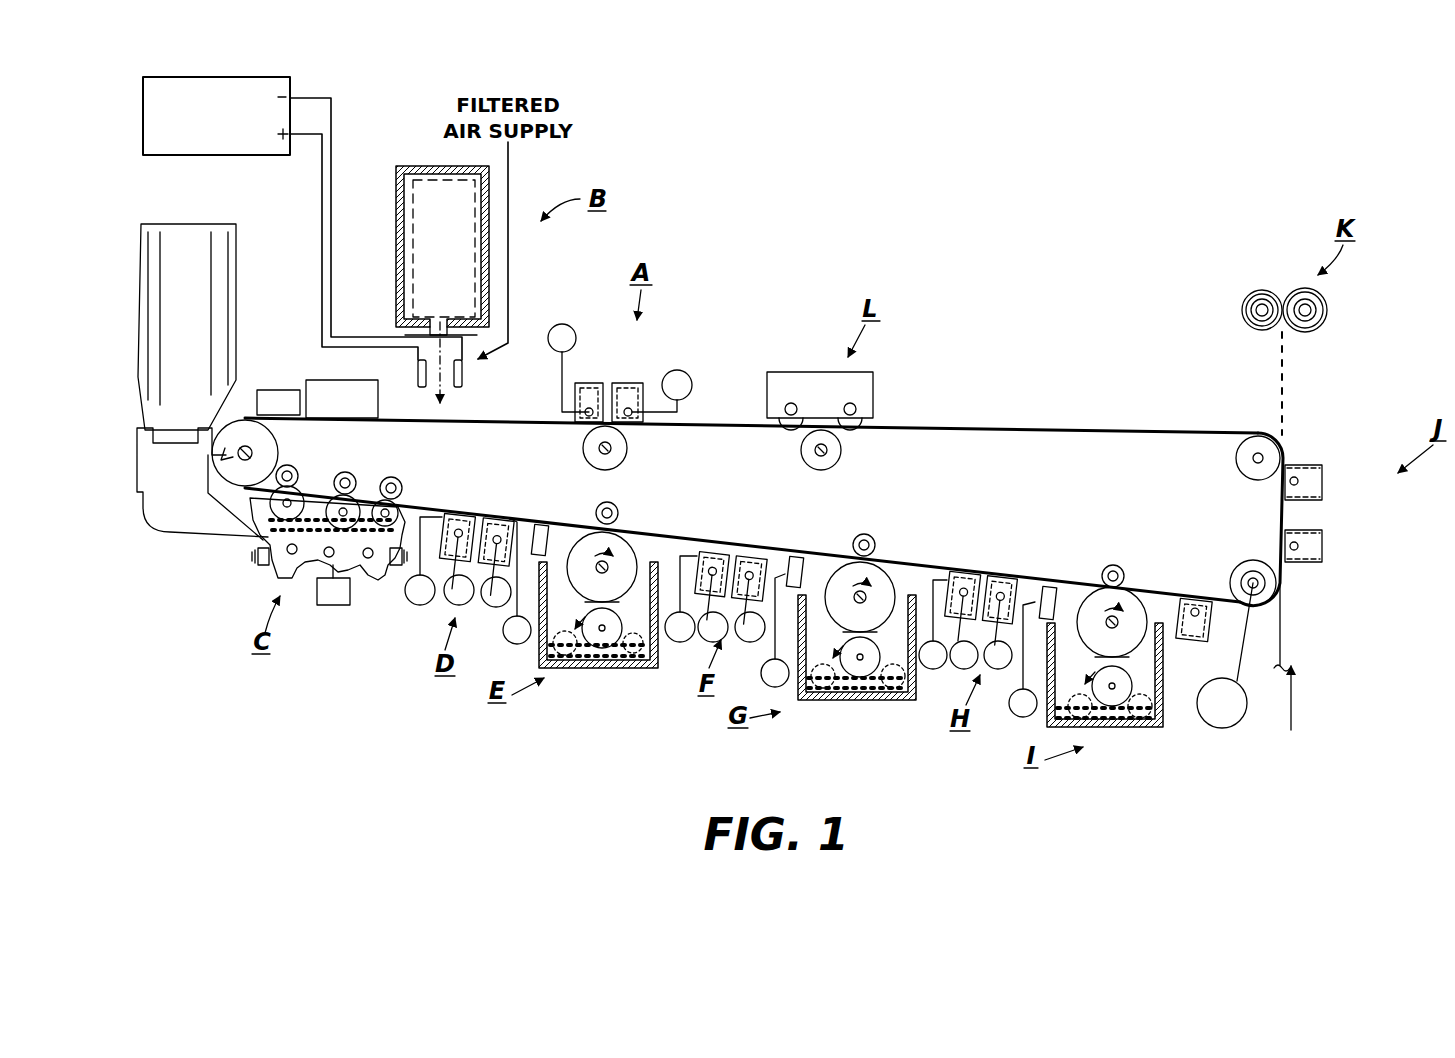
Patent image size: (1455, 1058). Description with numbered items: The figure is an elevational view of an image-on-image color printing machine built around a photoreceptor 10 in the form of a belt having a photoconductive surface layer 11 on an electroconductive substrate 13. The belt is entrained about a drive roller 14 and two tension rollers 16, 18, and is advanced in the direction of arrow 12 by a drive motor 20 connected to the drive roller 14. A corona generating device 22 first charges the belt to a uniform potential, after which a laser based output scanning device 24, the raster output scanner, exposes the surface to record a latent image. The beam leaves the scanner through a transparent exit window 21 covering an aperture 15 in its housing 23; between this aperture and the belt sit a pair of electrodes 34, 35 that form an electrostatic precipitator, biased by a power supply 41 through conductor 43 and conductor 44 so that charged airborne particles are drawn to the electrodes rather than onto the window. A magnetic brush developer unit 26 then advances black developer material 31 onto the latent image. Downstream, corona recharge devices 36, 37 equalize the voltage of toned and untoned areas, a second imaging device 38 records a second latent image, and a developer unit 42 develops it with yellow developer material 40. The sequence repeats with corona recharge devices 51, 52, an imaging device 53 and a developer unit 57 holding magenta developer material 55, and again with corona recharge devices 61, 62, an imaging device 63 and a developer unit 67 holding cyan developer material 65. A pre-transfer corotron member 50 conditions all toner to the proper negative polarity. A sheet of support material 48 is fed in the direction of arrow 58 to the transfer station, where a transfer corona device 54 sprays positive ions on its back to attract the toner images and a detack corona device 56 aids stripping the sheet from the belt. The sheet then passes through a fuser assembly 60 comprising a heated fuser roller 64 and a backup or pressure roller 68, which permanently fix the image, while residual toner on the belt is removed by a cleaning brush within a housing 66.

The photoreceptor 10 is at (764, 475).
The photoconductive surface layer 11 is at (1115, 428).
The arrow 12 is at (685, 440).
The electroconductive substrate 13 is at (1056, 431).
The drive roller 14 is at (1280, 584).
The aperture 15 is at (445, 307).
The tension roller 16 is at (245, 440).
The tension roller 18 is at (1253, 455).
The drive motor 20 is at (1242, 720).
The transparent exit window 21 is at (422, 338).
The corona generating device 22 is at (587, 320).
The housing 23 is at (404, 230).
The laser based output scanning device 24 is at (411, 238).
The magnetic brush developer unit 26 is at (329, 531).
The developer material 31 is at (314, 520).
The electrode 34 is at (418, 378).
The electrode 35 is at (466, 374).
The corona recharge device 36 is at (446, 521).
The corona recharge device 37 is at (539, 538).
The second exposure or imaging device 38 is at (548, 535).
The developer material 40 is at (598, 621).
The power supply 41 is at (142, 116).
The developer unit 42 is at (603, 667).
The conductor 43 is at (322, 269).
The conductor 44 is at (331, 289).
The sheet of support material 48 is at (1282, 639).
The pre-transfer corotron member 50 is at (1189, 642).
The corona recharge device 51 is at (704, 555).
The corona recharge device 52 is at (765, 568).
The imaging device 53 is at (806, 564).
The transfer corona device 54 is at (1322, 545).
The third developer material 55 is at (857, 657).
The detack corona device 56 is at (1322, 466).
The developer unit 57 is at (866, 699).
The arrow 58 is at (1292, 712).
The fuser assembly 60 is at (1286, 317).
The corona recharge device 61 is at (951, 578).
The corona recharge device 62 is at (1015, 588).
The imaging device 63 is at (1050, 644).
The heated fuser roller 64 is at (1250, 308).
The cyan developer material 65 is at (1042, 720).
The housing 66 is at (805, 380).
The developer unit 67 is at (1115, 728).
The backup or pressure roller 68 is at (1322, 308).